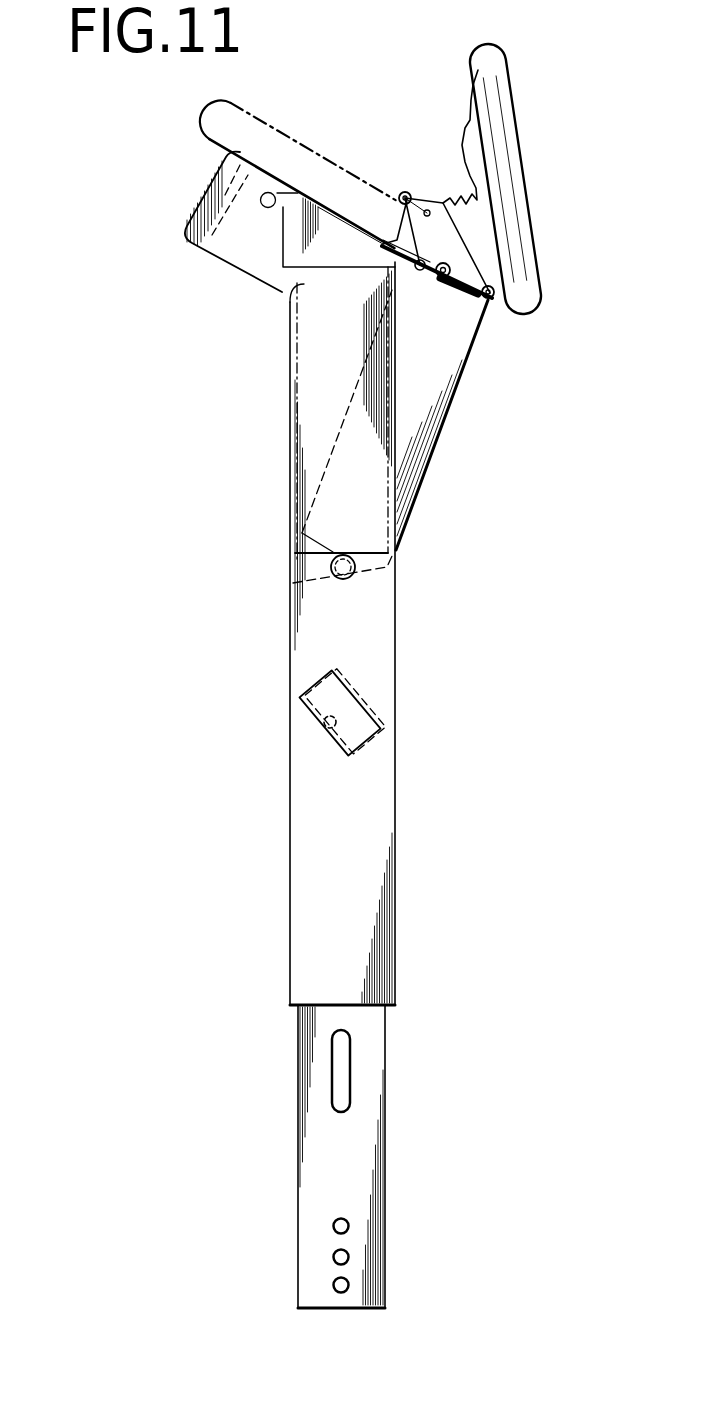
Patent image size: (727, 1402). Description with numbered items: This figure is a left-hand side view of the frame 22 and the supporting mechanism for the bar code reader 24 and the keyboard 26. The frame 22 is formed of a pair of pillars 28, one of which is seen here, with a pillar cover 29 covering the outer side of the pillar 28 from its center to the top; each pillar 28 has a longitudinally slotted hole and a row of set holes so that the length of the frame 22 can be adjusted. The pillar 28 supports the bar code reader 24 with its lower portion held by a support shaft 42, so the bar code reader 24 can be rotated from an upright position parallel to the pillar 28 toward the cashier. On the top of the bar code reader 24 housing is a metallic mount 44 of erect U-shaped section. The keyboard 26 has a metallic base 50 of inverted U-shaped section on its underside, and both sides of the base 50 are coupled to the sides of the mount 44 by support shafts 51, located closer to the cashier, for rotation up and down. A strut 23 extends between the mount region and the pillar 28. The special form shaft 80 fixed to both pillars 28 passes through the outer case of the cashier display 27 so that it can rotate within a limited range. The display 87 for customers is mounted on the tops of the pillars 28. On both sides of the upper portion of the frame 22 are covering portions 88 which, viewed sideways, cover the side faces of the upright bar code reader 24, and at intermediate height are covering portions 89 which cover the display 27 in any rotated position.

The frame 22 is at (318, 655).
The strut link 23 is at (455, 392).
The bar code reader 24 is at (300, 281).
The keyboard 26 is at (296, 155).
The display 27 is at (375, 700).
The pillar 28 is at (318, 1115).
The pillar cover 29 is at (308, 853).
The support shaft 42 is at (330, 574).
The mount 44 is at (458, 257).
The base 50 is at (440, 201).
The support shaft 51 is at (489, 303).
The special form shaft 80 is at (318, 728).
The display 87 is at (220, 210).
The covering portion 88 is at (317, 397).
The covering portion 89 is at (367, 828).